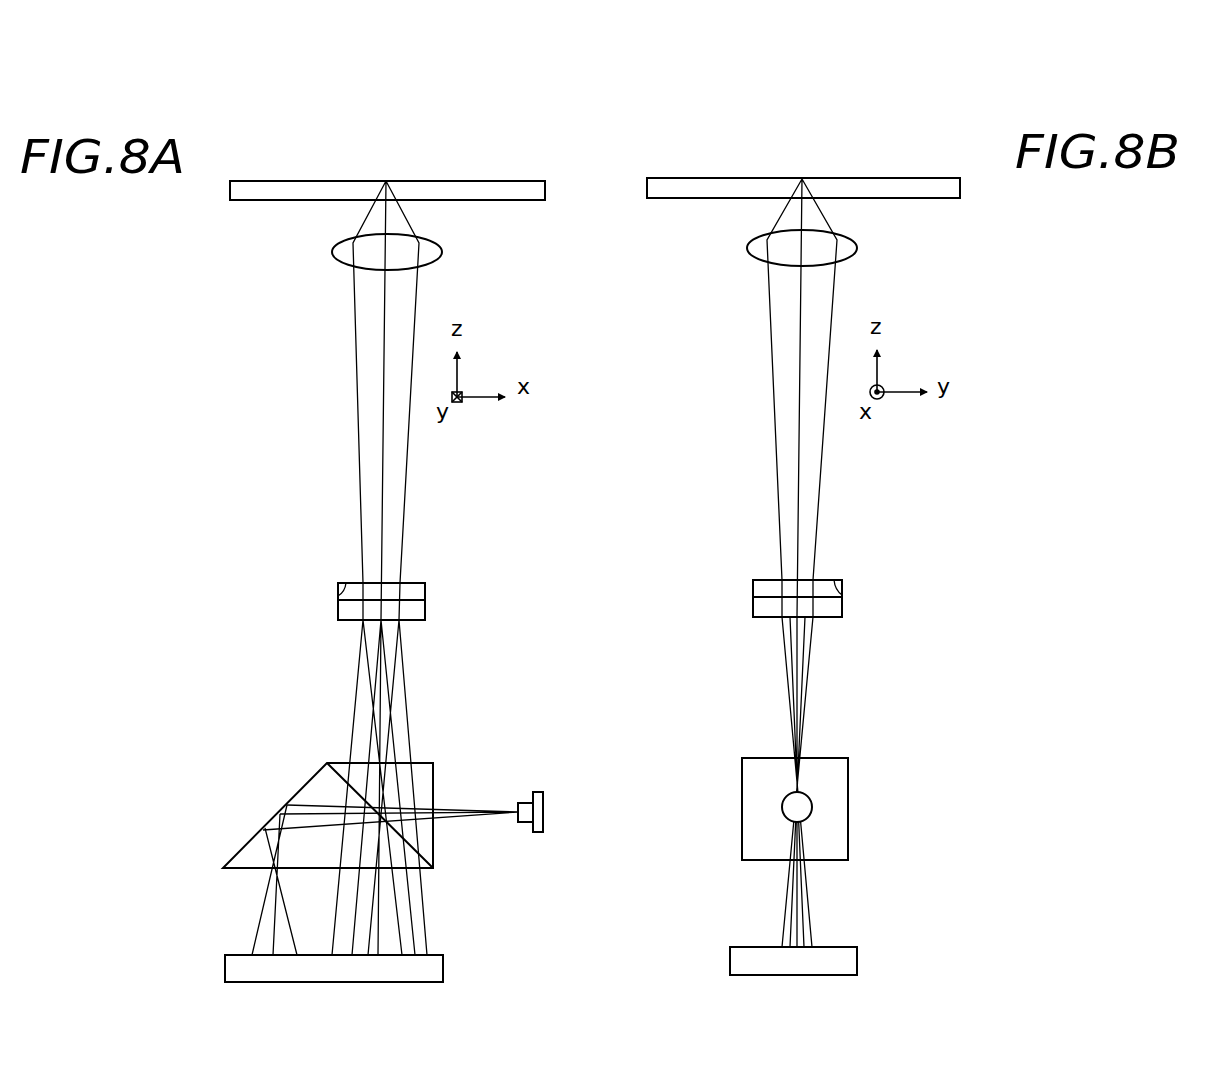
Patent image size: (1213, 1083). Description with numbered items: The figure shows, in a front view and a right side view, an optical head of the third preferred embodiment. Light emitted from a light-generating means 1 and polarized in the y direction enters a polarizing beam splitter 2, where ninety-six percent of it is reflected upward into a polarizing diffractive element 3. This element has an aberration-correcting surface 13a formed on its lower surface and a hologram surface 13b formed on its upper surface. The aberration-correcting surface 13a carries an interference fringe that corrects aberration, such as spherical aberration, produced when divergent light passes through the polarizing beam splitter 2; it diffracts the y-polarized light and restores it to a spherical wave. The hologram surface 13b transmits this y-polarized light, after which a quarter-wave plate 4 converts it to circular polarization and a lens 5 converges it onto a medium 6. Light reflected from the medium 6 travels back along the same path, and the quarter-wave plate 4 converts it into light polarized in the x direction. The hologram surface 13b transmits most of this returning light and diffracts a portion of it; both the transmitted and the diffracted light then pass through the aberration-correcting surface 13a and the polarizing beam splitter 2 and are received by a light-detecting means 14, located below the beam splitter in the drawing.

In FIG. 8A, the light-generating means 1 is at (546, 805).
In FIG. 8B, the light-generating means 1 is at (781, 812).
In FIG. 8A, the polarizing beam splitter 2 is at (430, 763).
In FIG. 8B, the polarizing beam splitter 2 is at (742, 758).
In FIG. 8A, the polarizing diffractive element 3 is at (427, 604).
In FIG. 8B, the polarizing diffractive element 3 is at (752, 603).
In FIG. 8A, the quarter-wave plate 4 is at (424, 585).
In FIG. 8B, the quarter-wave plate 4 is at (755, 582).
In FIG. 8A, the lens 5 is at (443, 255).
In FIG. 8B, the lens 5 is at (747, 250).
In FIG. 8A, the medium 6 is at (483, 182).
In FIG. 8B, the medium 6 is at (683, 181).
In FIG. 8A, the aberration-correcting surface 13a is at (350, 625).
In FIG. 8B, the aberration-correcting surface 13a is at (838, 622).
In FIG. 8A, the hologram surface 13b is at (338, 587).
In FIG. 8B, the hologram surface 13b is at (842, 582).
In FIG. 8A, the light-detecting means 14 is at (443, 958).
In FIG. 8B, the light-detecting means 14 is at (730, 962).